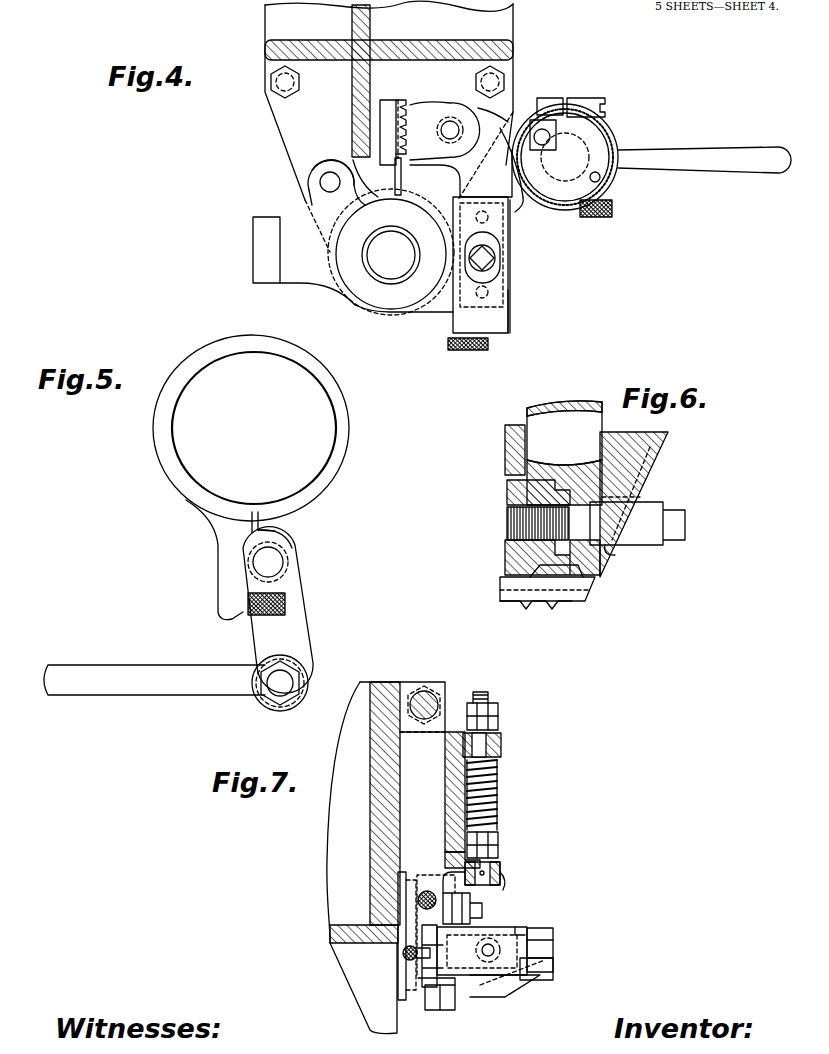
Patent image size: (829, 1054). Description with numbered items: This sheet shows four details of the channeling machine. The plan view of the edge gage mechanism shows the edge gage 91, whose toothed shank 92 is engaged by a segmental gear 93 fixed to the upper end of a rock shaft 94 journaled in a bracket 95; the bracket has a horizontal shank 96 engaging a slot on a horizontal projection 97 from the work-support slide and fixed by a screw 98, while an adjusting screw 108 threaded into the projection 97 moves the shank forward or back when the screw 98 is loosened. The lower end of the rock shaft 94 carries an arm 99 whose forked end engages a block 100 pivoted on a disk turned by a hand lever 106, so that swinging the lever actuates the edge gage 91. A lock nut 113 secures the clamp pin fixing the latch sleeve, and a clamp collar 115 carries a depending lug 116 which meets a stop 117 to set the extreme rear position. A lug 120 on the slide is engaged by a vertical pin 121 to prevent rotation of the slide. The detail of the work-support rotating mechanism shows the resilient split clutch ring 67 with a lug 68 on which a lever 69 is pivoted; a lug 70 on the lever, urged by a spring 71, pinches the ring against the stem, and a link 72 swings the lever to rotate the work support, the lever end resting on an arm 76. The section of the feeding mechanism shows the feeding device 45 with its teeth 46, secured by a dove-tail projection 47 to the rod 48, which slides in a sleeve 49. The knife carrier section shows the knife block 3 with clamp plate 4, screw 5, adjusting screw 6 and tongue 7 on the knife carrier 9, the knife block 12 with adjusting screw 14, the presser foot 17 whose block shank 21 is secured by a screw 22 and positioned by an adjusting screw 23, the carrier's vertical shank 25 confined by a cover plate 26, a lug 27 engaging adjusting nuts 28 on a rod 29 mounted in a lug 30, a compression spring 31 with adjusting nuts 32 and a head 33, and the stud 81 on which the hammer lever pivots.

In FIG. 4, the arm 76 is at (253, 265).
In FIG. 4, the edge gage 91 is at (401, 189).
In FIG. 4, the toothed shank 92 is at (380, 119).
In FIG. 4, the segmental gear 93 is at (418, 118).
In FIG. 4, the rock shaft 94 is at (480, 112).
In FIG. 4, the bracket 95 is at (505, 142).
In FIG. 4, the horizontal shank 96 is at (500, 220).
In FIG. 4, the horizontal projection 97 is at (511, 295).
In FIG. 4, the screw 98 is at (496, 262).
In FIG. 4, the arm 99 is at (540, 118).
In FIG. 4, the block 100 is at (590, 126).
In FIG. 4, the hand lever 106 is at (688, 162).
In FIG. 4, the adjusting screw 108 is at (467, 351).
In FIG. 4, the lock nut 113 is at (612, 210).
In FIG. 4, the clamp collar 115 is at (612, 137).
In FIG. 4, the depending lug 116 is at (565, 94).
In FIG. 4, the stop 117 is at (522, 212).
In FIG. 4, the lug 120 is at (318, 191).
In FIG. 4, the vertical pin 121 is at (322, 182).
In FIG. 5, the clutch ring 67 is at (178, 478).
In FIG. 5, the lug 68 is at (238, 576).
In FIG. 5, the lever 69 is at (290, 634).
In FIG. 5, the lug 70 is at (283, 541).
In FIG. 5, the spring 71 is at (262, 615).
In FIG. 5, the link 72 is at (205, 685).
In FIG. 6, the feeding device 45 is at (572, 584).
In FIG. 6, the teeth 46 is at (550, 604).
In FIG. 6, the dove-tail projection 47 is at (562, 569).
In FIG. 6, the rod 48 is at (550, 432).
In FIG. 6, the sleeve 49 is at (632, 467).
In FIG. 7, the knife block 3 is at (538, 982).
In FIG. 7, the clamp plate 4 is at (498, 992).
In FIG. 7, the screw 5 is at (490, 944).
In FIG. 7, the adjusting screw 6 is at (518, 940).
In FIG. 7, the horizontal tongue 7 is at (546, 944).
In FIG. 7, the knife carrier 9 is at (410, 972).
In FIG. 7, the knife block 12 is at (435, 1004).
In FIG. 7, the adjusting screw 14 is at (405, 956).
In FIG. 7, the presser foot 17 is at (449, 1001).
In FIG. 7, the horizontal shank 21 is at (443, 906).
In FIG. 7, the screw 22 is at (474, 909).
In FIG. 7, the adjusting screw 23 is at (418, 899).
In FIG. 7, the vertical shank 25 is at (415, 783).
In FIG. 7, the cover plate 26 is at (502, 746).
In FIG. 7, the lug 27 is at (503, 871).
In FIG. 7, the adjusting nuts 28 is at (500, 848).
In FIG. 7, the rod 29 is at (488, 694).
In FIG. 7, the lug 30 is at (500, 758).
In FIG. 7, the compression spring 31 is at (497, 801).
In FIG. 7, the adjusting nuts 32 is at (498, 715).
In FIG. 7, the head 33 is at (490, 886).
In FIG. 7, the stud 81 is at (432, 690).